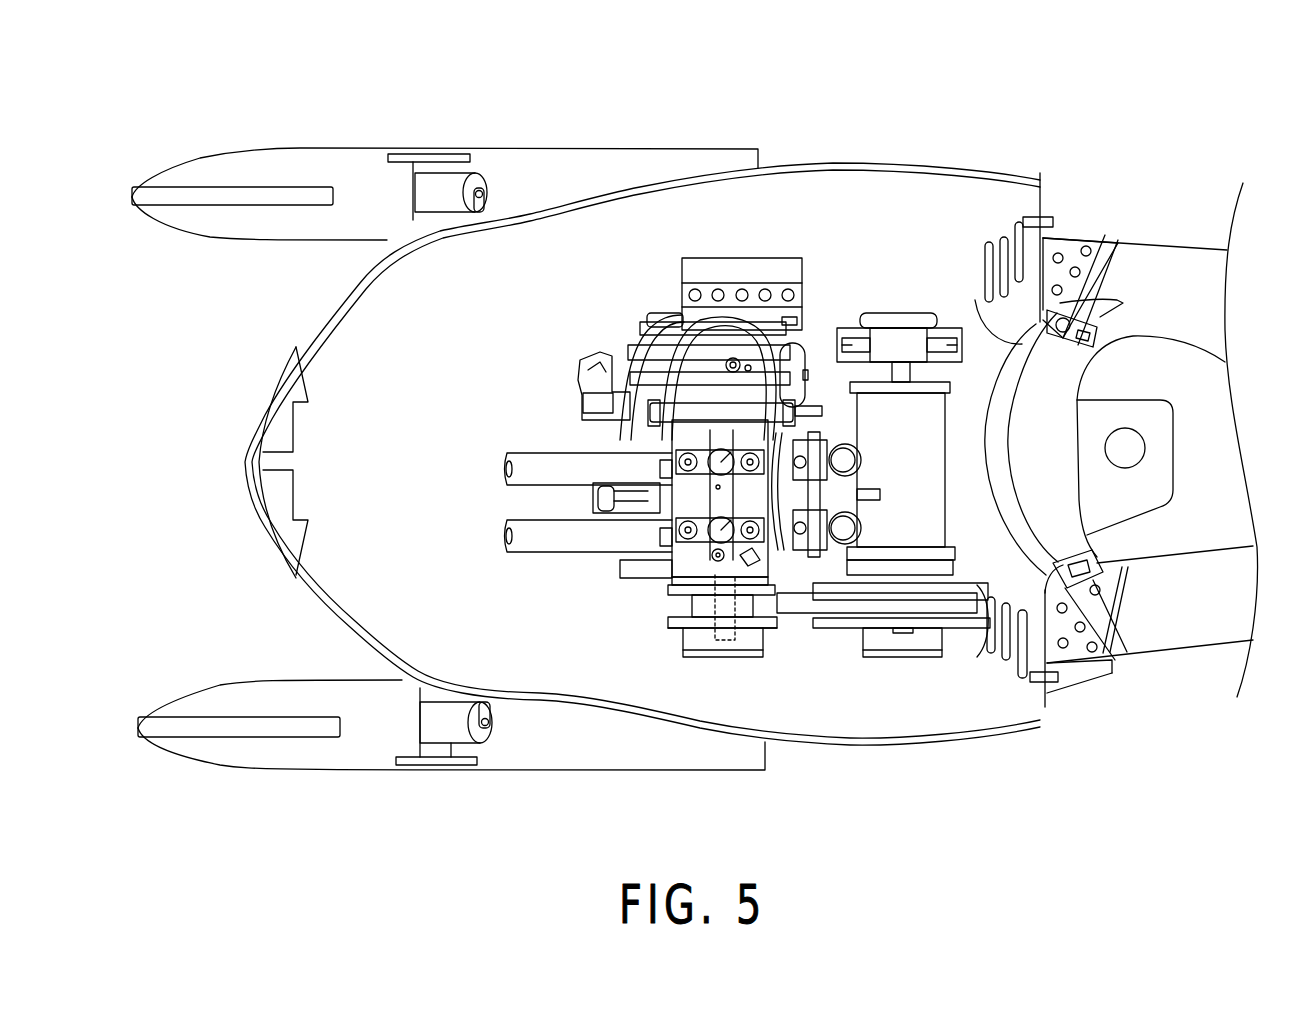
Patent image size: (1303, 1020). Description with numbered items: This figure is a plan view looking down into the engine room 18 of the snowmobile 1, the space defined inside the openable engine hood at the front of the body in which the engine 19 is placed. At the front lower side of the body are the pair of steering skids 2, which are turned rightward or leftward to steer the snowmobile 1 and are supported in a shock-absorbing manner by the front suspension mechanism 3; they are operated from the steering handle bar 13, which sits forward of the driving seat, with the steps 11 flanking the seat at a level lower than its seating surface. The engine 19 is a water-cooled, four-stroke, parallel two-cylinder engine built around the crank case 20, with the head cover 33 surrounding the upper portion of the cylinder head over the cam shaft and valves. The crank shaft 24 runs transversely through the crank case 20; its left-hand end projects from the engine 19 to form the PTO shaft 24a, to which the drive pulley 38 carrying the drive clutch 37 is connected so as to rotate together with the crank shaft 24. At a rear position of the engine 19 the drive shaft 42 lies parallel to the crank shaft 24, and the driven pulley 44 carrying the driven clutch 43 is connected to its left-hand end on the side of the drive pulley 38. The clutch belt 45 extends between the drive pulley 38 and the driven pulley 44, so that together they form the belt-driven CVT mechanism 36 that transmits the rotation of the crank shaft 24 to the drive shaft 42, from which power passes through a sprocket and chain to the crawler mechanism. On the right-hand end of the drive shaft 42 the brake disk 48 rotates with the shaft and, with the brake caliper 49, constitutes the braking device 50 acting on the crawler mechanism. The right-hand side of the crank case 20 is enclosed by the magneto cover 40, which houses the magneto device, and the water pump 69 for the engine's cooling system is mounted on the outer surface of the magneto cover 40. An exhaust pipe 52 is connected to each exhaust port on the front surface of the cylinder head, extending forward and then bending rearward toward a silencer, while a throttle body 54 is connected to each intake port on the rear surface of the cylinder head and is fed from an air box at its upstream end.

The snowmobile 1 is at (813, 112).
The steering skids 2 is at (300, 152).
The front suspension mechanism 3 is at (437, 188).
The steps 11 is at (1184, 250).
The steering handle bar 13 is at (1107, 240).
The engine room 18 is at (679, 213).
The engine 19 is at (809, 344).
The crank case 20 is at (643, 585).
The crank shaft 24 is at (713, 645).
The PTO shaft 24a is at (735, 642).
The head cover 33 is at (628, 400).
The CVT mechanism 36 is at (836, 632).
The drive clutch 37 is at (687, 647).
The drive pulley 38 is at (768, 630).
The magneto cover 40 is at (747, 352).
The drive shaft 42 is at (913, 370).
The driven clutch 43 is at (880, 646).
The driven pulley 44 is at (953, 667).
The clutch belt 45 is at (804, 610).
The brake disk 48 is at (950, 330).
The brake caliper 49 is at (890, 337).
The braking device 50 is at (908, 313).
The exhaust pipe 52 is at (538, 453).
The throttle body 54 is at (833, 440).
The water pump 69 is at (650, 312).